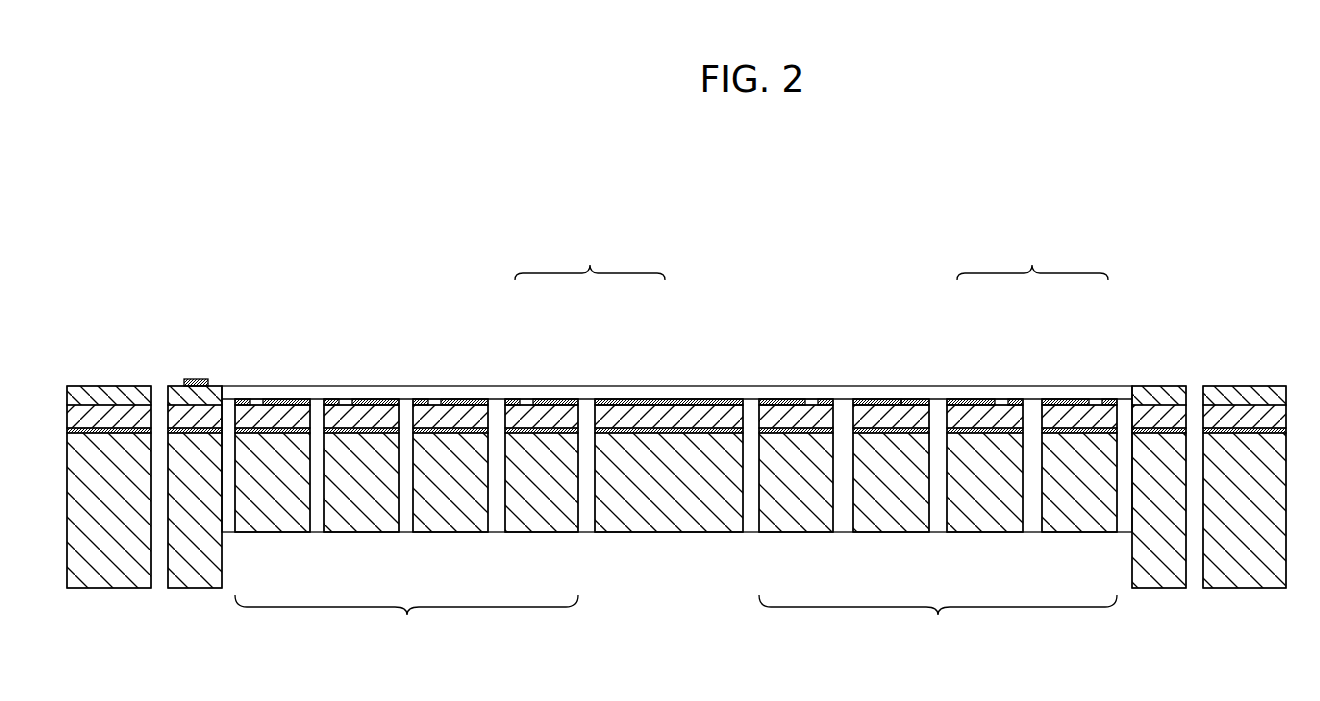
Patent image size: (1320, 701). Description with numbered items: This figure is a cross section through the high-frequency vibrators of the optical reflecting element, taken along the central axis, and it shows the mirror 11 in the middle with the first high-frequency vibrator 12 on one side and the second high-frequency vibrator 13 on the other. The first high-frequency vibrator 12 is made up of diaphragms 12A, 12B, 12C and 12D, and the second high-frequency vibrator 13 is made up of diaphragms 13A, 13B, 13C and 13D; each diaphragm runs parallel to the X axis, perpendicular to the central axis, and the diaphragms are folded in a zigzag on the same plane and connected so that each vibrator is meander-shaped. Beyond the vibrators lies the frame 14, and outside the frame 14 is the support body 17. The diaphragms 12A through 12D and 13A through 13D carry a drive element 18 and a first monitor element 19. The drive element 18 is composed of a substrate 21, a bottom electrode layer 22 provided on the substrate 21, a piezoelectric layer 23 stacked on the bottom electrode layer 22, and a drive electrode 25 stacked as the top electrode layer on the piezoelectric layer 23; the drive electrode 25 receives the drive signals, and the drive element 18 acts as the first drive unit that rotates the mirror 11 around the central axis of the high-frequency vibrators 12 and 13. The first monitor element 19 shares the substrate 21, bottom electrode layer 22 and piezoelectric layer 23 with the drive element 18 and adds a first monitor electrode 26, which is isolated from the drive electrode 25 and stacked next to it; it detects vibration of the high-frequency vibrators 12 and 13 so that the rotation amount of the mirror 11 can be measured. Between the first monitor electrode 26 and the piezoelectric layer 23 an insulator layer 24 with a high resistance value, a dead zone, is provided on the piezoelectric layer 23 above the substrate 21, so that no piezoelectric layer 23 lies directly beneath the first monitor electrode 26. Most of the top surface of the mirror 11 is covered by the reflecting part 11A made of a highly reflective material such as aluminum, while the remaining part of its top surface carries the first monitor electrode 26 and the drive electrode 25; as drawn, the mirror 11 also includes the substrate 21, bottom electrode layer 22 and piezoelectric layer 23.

The mirror 11 is at (595, 538).
The reflecting part 11A is at (713, 402).
The first high-frequency vibrator 12 is at (406, 621).
The diaphragm 12A is at (578, 538).
The diaphragm 12B is at (488, 538).
The diaphragm 12C is at (399, 538).
The diaphragm 12D is at (310, 538).
The second high-frequency vibrator 13 is at (938, 621).
The diaphragm 13A is at (759, 538).
The diaphragm 13B is at (853, 538).
The diaphragm 13C is at (947, 538).
The diaphragm 13D is at (1117, 538).
The frame 14 is at (168, 593).
The support body 17 is at (67, 593).
The drive element 18 is at (590, 257).
The first monitor element 19 is at (1077, 400).
The substrate 21 is at (76, 445).
The bottom electrode layer 22 is at (529, 425).
The piezoelectric layer 23 is at (540, 416).
The insulator layer 24 is at (186, 396).
The drive electrode 25 is at (394, 402).
The first monitor electrode 26 is at (196, 383).